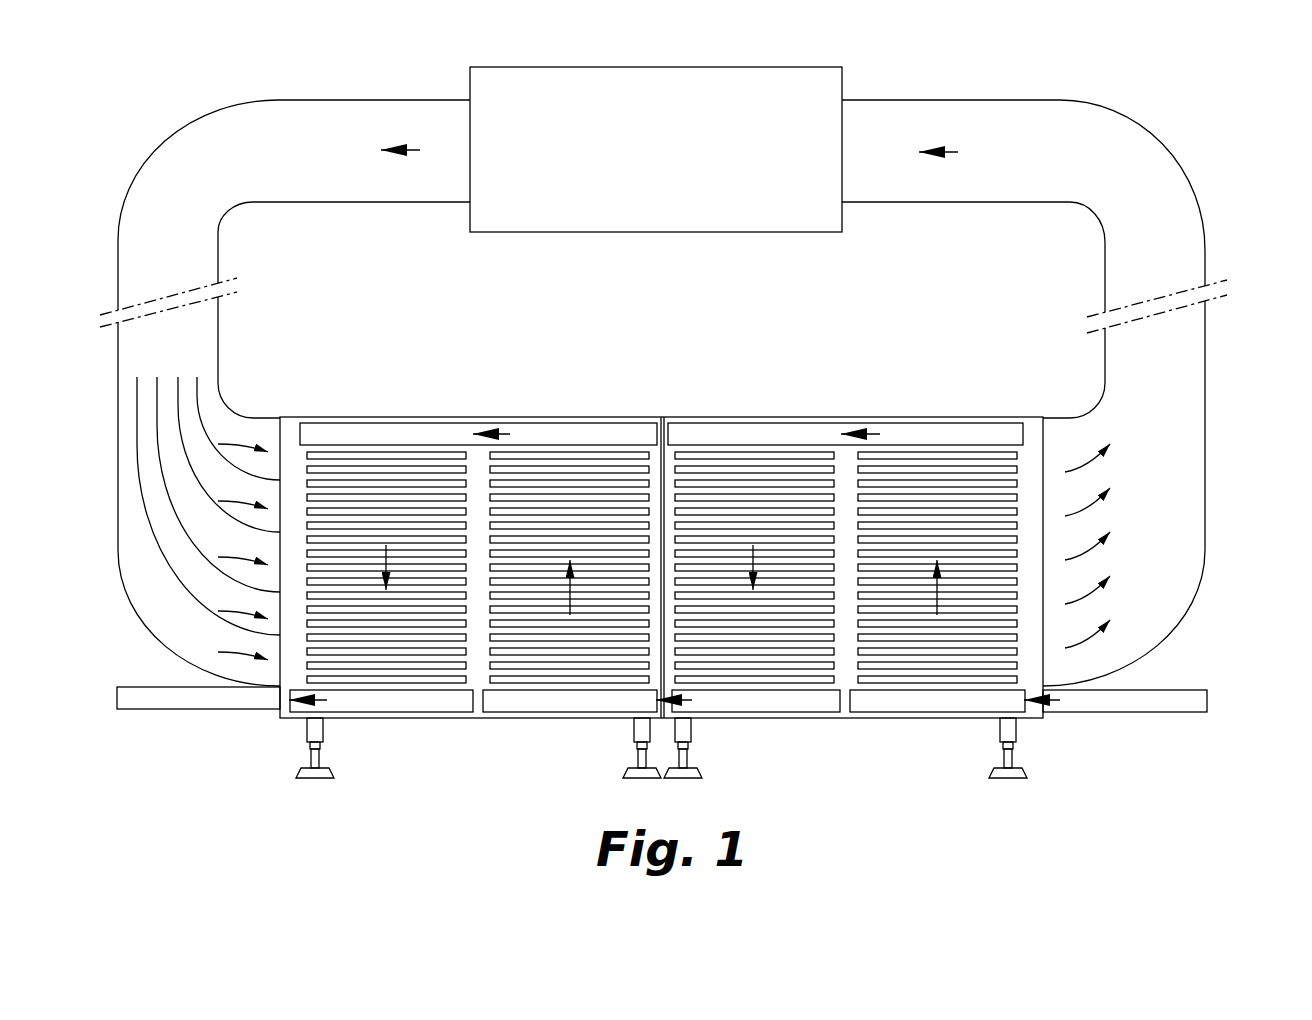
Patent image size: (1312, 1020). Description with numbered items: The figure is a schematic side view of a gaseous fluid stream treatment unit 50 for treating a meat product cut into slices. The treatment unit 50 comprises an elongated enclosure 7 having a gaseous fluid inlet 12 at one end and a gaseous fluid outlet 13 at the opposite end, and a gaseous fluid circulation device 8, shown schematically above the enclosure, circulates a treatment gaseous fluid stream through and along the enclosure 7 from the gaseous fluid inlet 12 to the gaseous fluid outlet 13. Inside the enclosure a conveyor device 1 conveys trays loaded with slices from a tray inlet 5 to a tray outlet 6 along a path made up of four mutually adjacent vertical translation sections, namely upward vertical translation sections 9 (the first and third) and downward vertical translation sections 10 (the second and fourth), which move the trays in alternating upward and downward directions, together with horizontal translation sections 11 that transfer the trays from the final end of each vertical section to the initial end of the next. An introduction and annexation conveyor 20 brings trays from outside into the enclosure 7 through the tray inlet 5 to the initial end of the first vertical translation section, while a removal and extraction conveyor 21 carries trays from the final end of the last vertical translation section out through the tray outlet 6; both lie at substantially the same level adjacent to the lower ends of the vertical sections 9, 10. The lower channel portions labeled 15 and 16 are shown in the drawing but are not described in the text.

The conveyor device 1 is at (1188, 673).
The tray inlet 5 is at (1043, 706).
The tray outlet 6 is at (280, 708).
The elongated enclosure 7 is at (648, 416).
The gaseous fluid circulation device 8 is at (653, 205).
The upward vertical translation section 9 is at (555, 478).
The downward vertical translation section 10 is at (385, 478).
The horizontal translation section 11 is at (480, 410).
The gaseous fluid inlet 12 is at (280, 432).
The gaseous fluid outlet 13 is at (1043, 434).
The lower air channel section 15 is at (566, 702).
The lower air channel section 16 is at (388, 702).
The introduction and annexation conveyor 20 is at (1165, 703).
The removal and extraction conveyor 21 is at (177, 700).
The gaseous fluid stream treatment unit 50 is at (1215, 150).